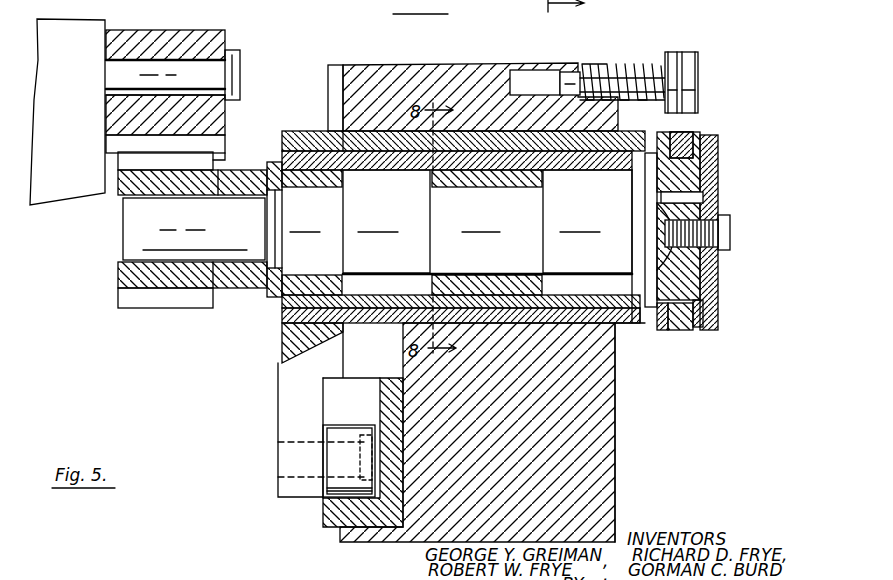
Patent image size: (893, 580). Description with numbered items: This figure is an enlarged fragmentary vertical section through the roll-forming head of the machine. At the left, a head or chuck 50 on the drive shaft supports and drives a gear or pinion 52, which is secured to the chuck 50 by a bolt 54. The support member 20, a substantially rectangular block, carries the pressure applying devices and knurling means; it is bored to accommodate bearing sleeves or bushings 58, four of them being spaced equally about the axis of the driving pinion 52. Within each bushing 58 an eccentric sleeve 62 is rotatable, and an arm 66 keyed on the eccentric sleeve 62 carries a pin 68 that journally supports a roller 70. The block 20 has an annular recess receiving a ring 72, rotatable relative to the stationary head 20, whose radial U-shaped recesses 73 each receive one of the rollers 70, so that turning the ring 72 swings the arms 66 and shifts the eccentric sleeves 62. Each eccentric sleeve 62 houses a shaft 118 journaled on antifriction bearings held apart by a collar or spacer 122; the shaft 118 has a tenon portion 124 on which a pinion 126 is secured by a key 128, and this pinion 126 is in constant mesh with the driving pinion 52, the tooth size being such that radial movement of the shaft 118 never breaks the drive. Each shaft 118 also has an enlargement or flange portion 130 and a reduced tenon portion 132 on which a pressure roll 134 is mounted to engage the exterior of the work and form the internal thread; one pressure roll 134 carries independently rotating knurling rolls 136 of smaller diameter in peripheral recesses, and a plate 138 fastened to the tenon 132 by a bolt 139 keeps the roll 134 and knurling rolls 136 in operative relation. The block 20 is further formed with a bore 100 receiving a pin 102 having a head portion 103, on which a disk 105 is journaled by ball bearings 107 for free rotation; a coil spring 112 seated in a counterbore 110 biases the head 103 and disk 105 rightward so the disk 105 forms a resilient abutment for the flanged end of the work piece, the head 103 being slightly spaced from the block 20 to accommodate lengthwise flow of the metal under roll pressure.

The support member 20 is at (617, 445).
The head or chuck 50 is at (62, 20).
The driving pinion 52 is at (222, 35).
The bolt 54 is at (212, 67).
The bearing sleeve 58 is at (595, 325).
The eccentric sleeve 62 is at (480, 308).
The arm 66 is at (280, 342).
The pin 68 is at (295, 477).
The roller 70 is at (360, 424).
The ring 72 is at (403, 520).
The U-shaped recess 73 is at (343, 377).
The bore 100 is at (536, 49).
The pin 102 is at (560, 72).
The head portion 103 is at (685, 52).
The disk 105 is at (700, 74).
The ball bearings 107 is at (690, 53).
The counterbore 110 is at (593, 67).
The coil spring 112 is at (632, 98).
The shaft 118 is at (280, 300).
The spacer 122 is at (533, 308).
The tenon portion 124 is at (132, 227).
The pinion 126 is at (117, 278).
The key 128 is at (222, 177).
The flange portion 130 is at (648, 318).
The tenon portion 132 is at (704, 199).
The pressure roll 134 is at (686, 134).
The knurling rolls 136 is at (703, 321).
The plate 138 is at (720, 279).
The bolt 139 is at (731, 223).